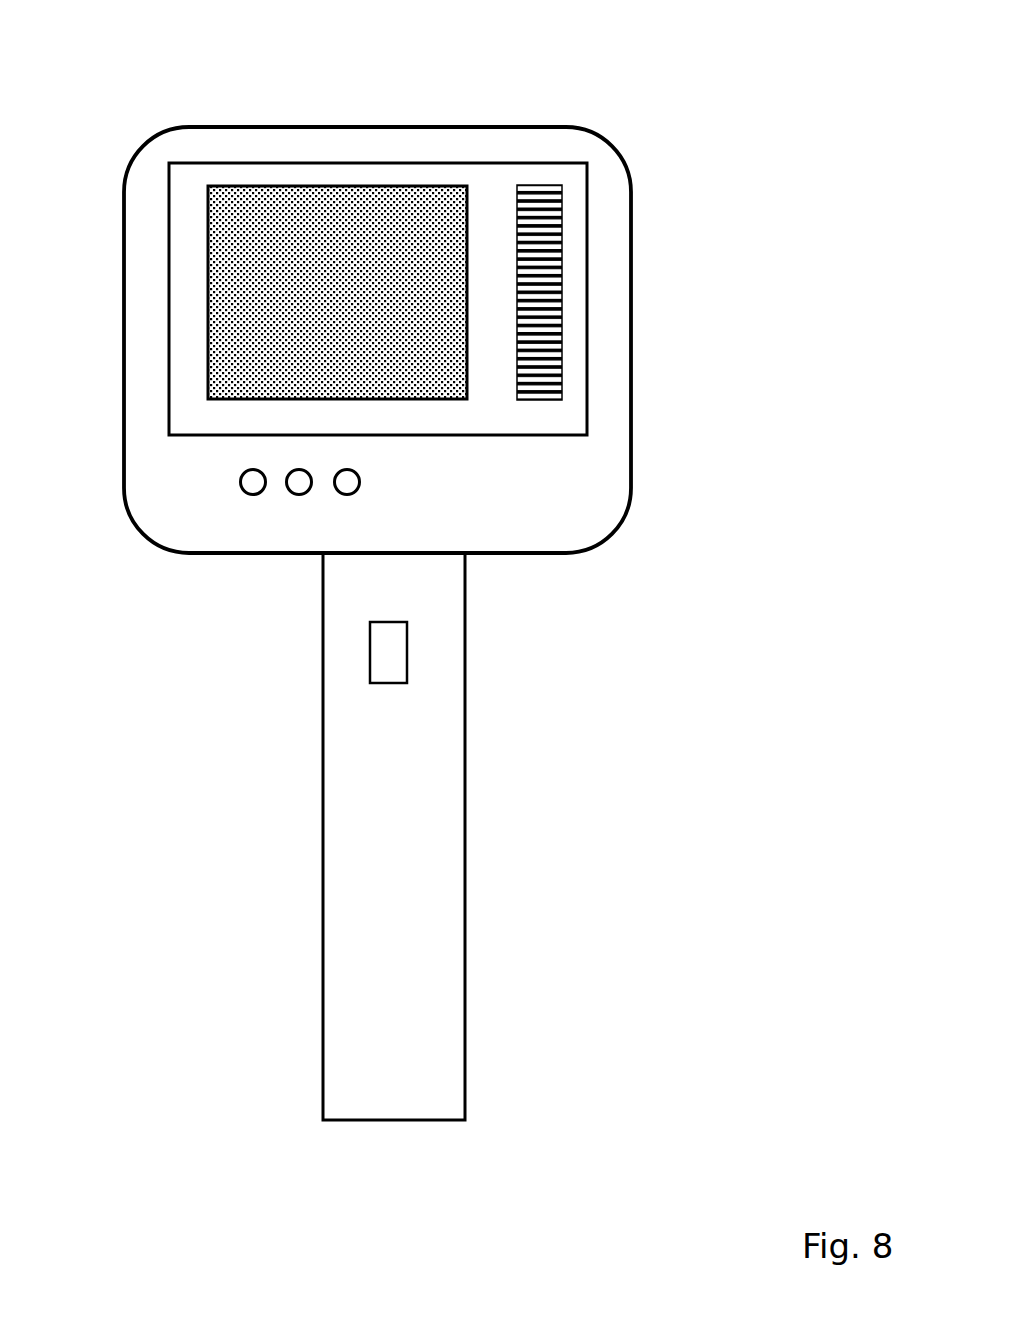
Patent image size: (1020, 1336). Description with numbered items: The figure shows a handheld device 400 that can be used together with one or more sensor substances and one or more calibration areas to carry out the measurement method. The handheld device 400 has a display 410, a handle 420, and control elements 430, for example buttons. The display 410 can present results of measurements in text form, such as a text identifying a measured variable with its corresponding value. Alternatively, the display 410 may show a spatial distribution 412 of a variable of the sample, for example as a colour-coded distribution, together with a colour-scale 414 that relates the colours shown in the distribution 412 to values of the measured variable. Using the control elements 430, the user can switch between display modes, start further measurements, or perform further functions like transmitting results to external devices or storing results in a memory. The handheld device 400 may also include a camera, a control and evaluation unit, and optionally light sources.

The handheld device 400 is at (715, 163).
The display 410 is at (245, 162).
The spatial distribution 412 is at (208, 262).
The colour-scale 414 is at (562, 204).
The handle 420 is at (466, 947).
The control elements 430 is at (347, 495).